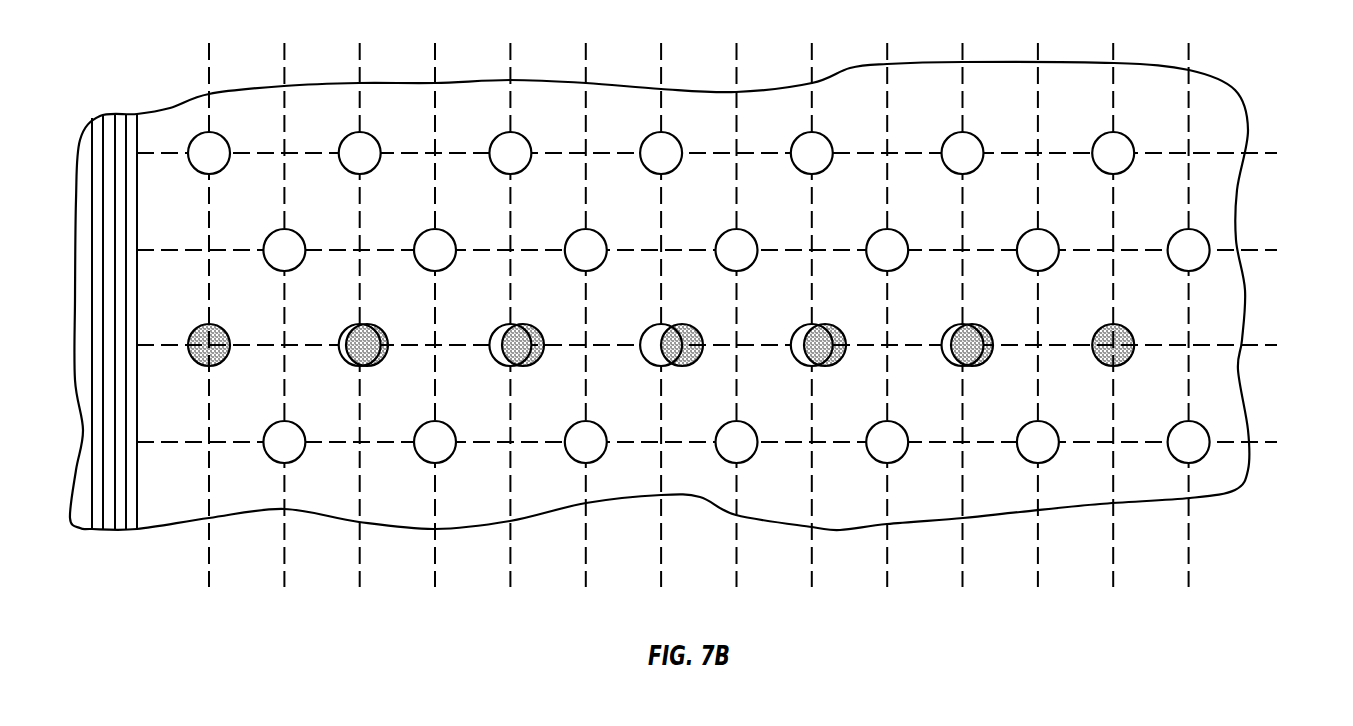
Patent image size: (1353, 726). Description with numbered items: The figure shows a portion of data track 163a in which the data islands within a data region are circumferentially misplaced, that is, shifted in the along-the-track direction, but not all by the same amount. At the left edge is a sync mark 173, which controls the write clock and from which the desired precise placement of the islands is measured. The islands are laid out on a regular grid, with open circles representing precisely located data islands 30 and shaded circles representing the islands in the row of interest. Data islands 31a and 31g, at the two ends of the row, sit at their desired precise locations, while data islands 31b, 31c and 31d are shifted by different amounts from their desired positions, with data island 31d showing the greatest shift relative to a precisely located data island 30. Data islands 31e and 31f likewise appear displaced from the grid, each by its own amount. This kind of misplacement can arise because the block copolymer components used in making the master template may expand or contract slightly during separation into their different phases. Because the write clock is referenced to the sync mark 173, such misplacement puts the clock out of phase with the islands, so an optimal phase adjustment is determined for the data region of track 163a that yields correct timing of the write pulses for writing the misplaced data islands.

The data island 30 is at (658, 364).
The data island 31a is at (205, 325).
The data island 31b is at (366, 325).
The data island 31c is at (523, 325).
The data island 31d is at (679, 325).
The data island 31e is at (823, 325).
The data island 31f is at (974, 325).
The data island 31g is at (1118, 325).
The data track 163a is at (1260, 345).
The sync mark 173 is at (96, 463).